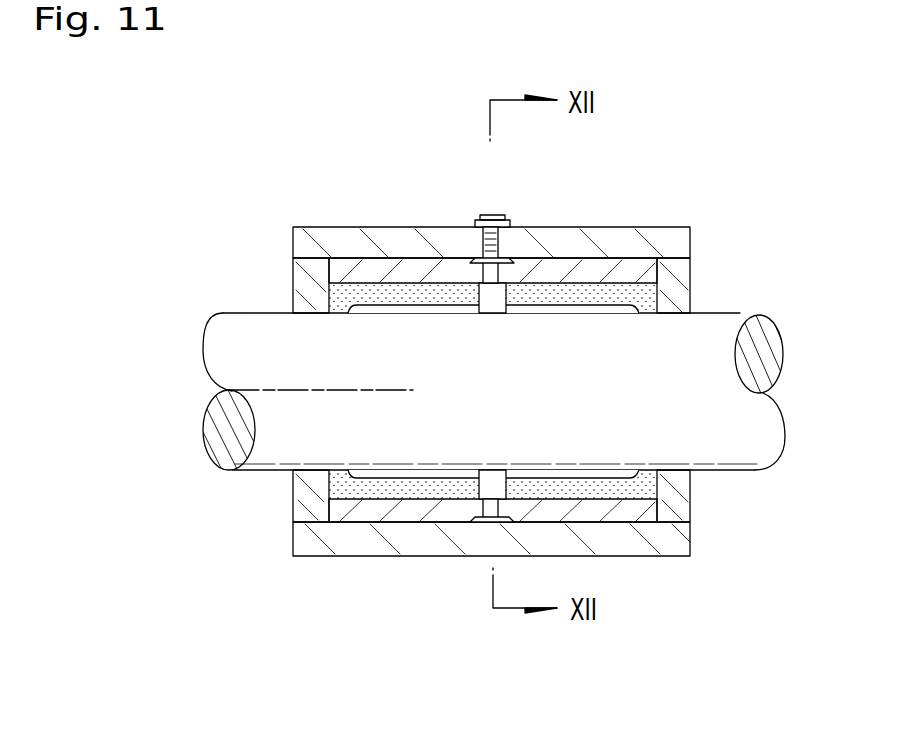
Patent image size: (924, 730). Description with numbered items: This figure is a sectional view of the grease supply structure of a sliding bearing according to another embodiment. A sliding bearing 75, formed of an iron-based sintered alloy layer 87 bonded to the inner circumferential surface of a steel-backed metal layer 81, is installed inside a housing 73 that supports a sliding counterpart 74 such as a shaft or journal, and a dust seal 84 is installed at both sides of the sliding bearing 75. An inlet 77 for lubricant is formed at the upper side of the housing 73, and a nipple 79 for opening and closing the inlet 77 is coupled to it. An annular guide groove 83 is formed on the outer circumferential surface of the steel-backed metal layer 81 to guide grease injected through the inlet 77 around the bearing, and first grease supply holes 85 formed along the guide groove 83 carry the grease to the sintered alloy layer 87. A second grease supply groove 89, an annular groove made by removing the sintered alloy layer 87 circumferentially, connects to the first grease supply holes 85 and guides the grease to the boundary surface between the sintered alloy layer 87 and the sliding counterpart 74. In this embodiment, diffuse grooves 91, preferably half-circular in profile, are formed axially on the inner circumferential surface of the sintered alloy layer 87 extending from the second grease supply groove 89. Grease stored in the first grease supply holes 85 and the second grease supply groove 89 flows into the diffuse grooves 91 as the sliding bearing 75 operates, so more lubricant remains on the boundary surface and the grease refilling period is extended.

The housing 73 is at (675, 232).
The sliding counterpart 74 is at (714, 315).
The sliding bearing 75 is at (392, 513).
The inlet 77 is at (491, 242).
The nipple 79 is at (492, 213).
The steel-backed metal layer 81 is at (337, 266).
The guide groove 83 is at (484, 262).
The dust seal 84 is at (682, 270).
The first grease supply holes 85 is at (490, 275).
The sintered alloy layer 87 is at (367, 290).
The second grease supply groove 89 is at (503, 297).
The diffuse grooves 91 is at (619, 307).